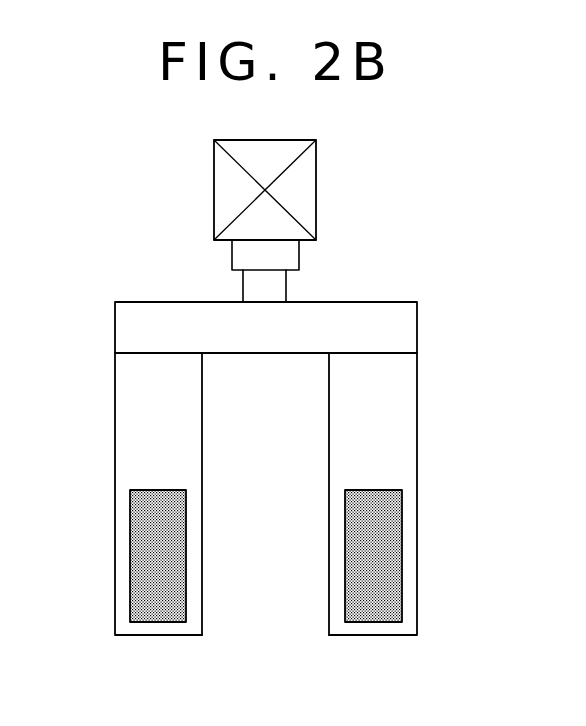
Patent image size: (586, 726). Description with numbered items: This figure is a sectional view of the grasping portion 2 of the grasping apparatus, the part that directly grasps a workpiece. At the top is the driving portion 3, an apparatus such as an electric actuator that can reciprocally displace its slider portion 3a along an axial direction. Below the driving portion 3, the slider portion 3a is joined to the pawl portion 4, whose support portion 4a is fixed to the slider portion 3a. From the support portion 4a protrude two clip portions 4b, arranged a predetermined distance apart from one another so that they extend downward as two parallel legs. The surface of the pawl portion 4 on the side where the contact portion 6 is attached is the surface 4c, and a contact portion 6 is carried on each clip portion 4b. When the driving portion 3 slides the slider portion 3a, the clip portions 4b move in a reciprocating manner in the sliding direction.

The grasping portion 2 is at (125, 162).
The driving portion 3 is at (343, 182).
The slider portion 3a is at (299, 247).
The pawl portion 4 is at (435, 380).
The support portion 4a is at (260, 357).
The clip portions 4b is at (114, 420).
The surface 4c is at (127, 462).
The contact portion 6 is at (177, 560).